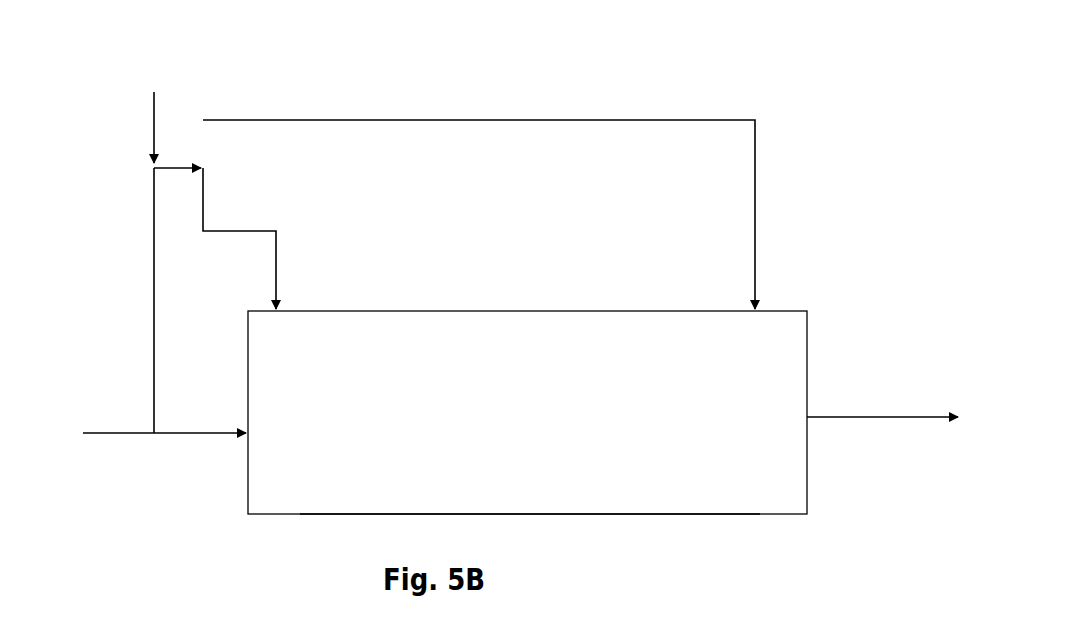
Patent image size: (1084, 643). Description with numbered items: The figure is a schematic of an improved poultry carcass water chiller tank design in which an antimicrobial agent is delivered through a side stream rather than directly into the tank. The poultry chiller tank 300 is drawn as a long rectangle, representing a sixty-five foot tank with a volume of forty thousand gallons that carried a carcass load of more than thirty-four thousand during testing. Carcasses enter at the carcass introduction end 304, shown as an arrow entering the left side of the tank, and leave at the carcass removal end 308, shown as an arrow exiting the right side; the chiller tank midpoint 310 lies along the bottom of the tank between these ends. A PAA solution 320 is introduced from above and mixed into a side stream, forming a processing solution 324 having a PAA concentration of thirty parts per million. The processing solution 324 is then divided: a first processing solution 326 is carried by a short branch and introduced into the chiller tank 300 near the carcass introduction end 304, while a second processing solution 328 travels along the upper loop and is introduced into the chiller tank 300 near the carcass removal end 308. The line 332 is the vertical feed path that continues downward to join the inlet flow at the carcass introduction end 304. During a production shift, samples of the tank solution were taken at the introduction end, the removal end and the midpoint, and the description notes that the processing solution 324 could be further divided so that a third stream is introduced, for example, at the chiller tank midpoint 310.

The poultry chiller tank 300 is at (760, 514).
The carcass introduction end 304 is at (250, 480).
The carcass removal end 308 is at (807, 473).
The chiller tank midpoint 310 is at (507, 514).
The PAA solution 320 is at (153, 102).
The processing solution 324 is at (173, 165).
The first processing solution 326 is at (248, 231).
The second processing solution 328 is at (755, 172).
The feed line to reactor inlet 332 is at (154, 307).